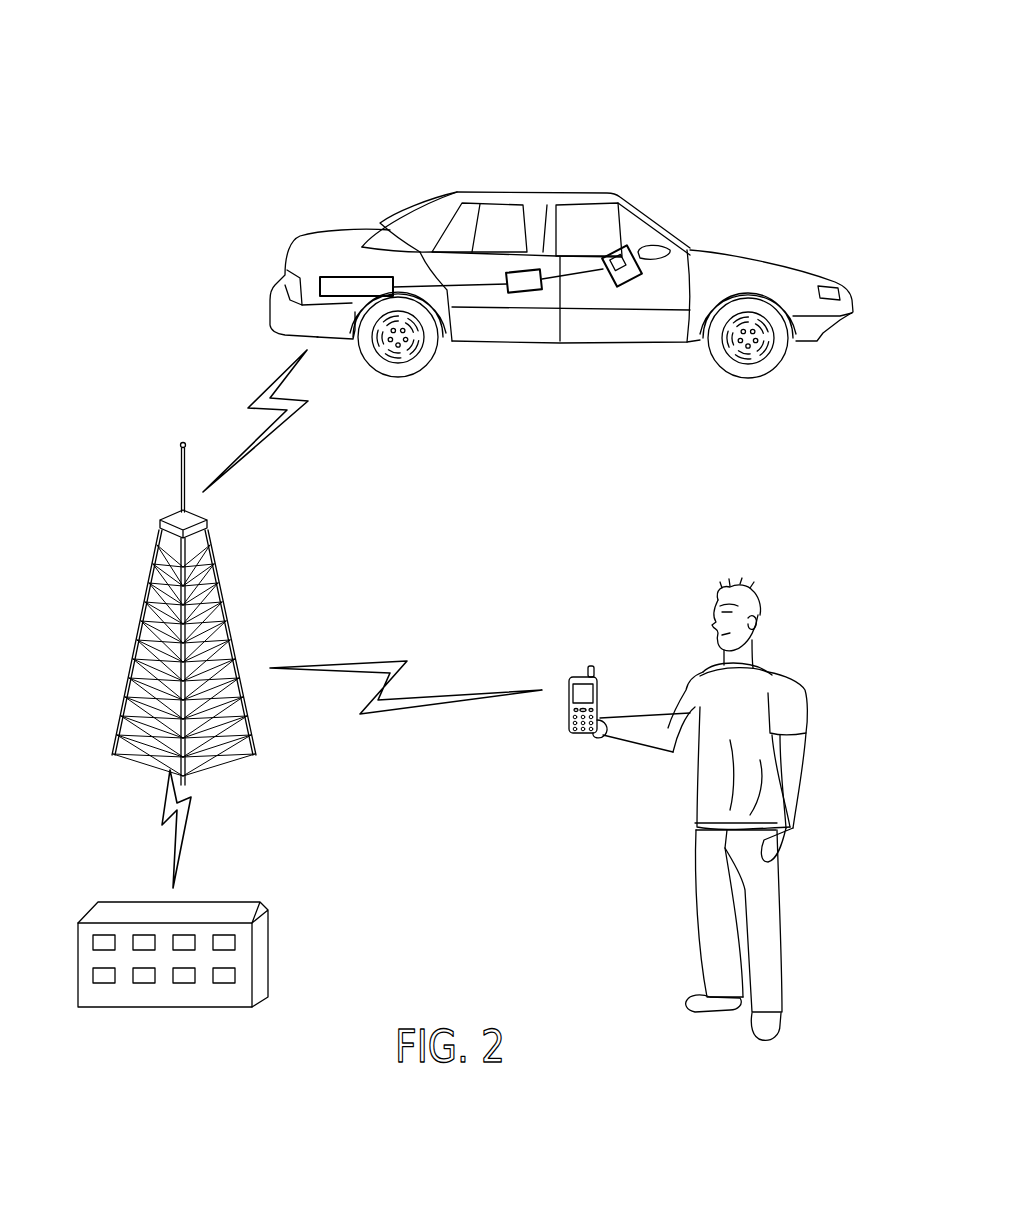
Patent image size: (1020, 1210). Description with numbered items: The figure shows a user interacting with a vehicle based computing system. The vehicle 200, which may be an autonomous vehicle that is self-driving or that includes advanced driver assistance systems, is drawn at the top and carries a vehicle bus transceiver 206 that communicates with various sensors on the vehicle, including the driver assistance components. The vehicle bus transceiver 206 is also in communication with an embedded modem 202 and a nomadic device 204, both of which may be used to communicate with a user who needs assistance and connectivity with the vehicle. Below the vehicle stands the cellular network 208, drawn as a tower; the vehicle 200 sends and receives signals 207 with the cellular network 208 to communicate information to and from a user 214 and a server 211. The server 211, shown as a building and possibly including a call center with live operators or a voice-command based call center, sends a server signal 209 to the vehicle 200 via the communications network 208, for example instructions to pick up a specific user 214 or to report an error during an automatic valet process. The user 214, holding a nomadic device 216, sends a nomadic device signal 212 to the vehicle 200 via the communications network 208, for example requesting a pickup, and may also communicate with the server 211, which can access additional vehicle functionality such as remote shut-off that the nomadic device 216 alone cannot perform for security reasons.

The vehicle 200 is at (660, 72).
The embedded modem 202 is at (350, 276).
The nomadic device 204 is at (626, 250).
The vehicle bus transceiver 206 is at (522, 270).
The signals 207 is at (262, 390).
The cellular network 208 is at (138, 623).
The server signal 209 is at (175, 853).
The server 211 is at (268, 962).
The nomadic device signal 212 is at (377, 660).
The user 214 is at (790, 676).
The nomadic device 216 is at (560, 717).